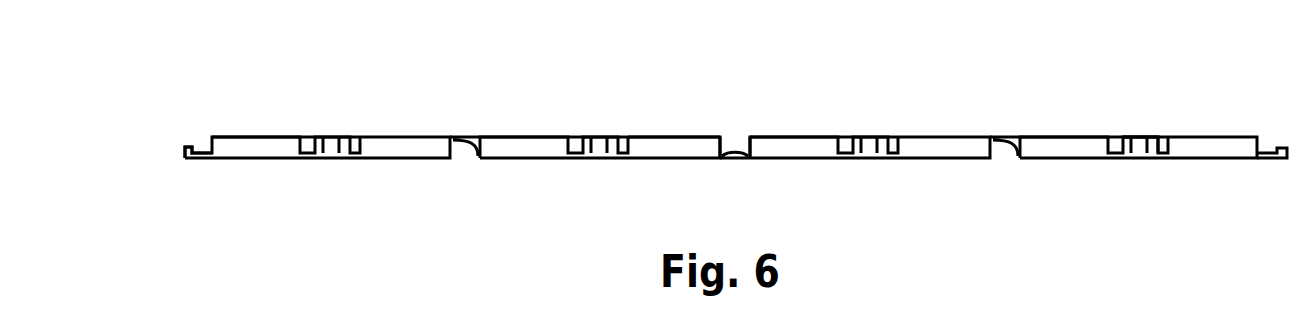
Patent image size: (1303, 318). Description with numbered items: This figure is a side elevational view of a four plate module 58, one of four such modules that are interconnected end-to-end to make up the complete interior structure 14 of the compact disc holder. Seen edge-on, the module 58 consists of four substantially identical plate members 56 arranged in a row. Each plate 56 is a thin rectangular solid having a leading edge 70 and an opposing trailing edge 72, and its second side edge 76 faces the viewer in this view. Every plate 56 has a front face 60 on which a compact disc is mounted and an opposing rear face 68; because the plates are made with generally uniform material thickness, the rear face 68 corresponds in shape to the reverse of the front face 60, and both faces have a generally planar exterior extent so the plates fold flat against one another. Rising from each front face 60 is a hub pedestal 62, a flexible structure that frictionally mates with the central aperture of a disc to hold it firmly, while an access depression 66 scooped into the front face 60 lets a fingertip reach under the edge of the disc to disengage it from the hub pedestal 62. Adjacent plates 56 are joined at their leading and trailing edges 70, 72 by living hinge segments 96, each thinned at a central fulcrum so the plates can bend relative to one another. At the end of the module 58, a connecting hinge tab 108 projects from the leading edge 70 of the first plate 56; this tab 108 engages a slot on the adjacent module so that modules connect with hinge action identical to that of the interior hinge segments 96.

The interior structure 14 is at (931, 94).
The plate member 56 is at (270, 153).
The four plate module 58 is at (546, 114).
The front face 60 is at (1160, 140).
The hub pedestal 62 is at (860, 137).
The access depression 66 is at (1113, 139).
The rear face 68 is at (1214, 160).
The leading edge 70 is at (472, 159).
The trailing edge 72 is at (724, 138).
The second side edge 76 is at (672, 148).
The hinge segment 96 is at (731, 160).
The connecting hinge tab 108 is at (185, 148).